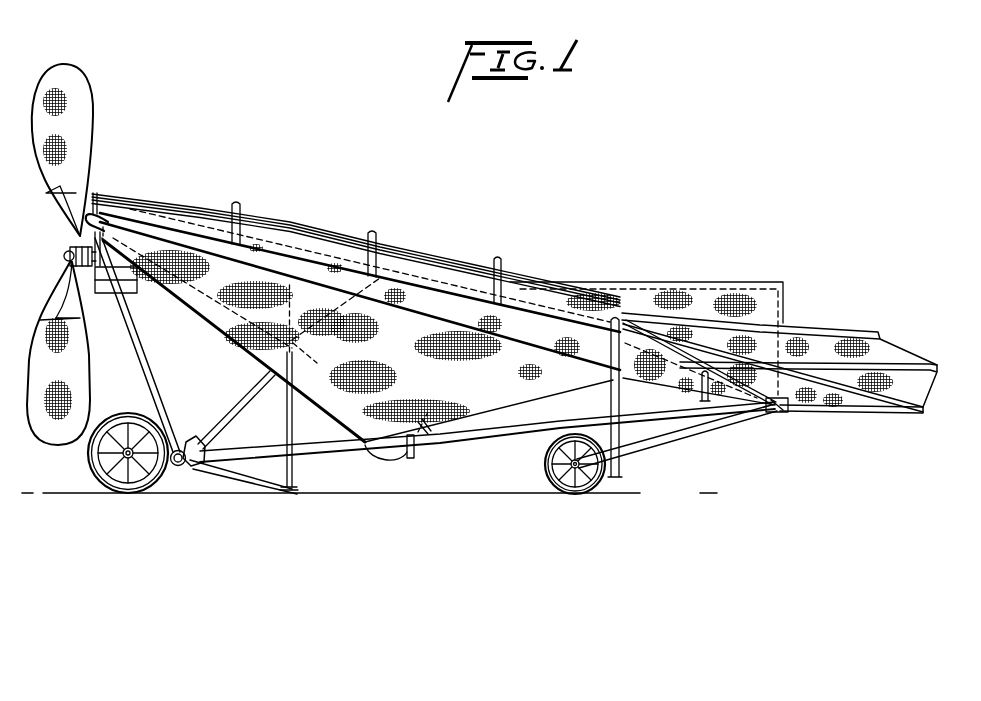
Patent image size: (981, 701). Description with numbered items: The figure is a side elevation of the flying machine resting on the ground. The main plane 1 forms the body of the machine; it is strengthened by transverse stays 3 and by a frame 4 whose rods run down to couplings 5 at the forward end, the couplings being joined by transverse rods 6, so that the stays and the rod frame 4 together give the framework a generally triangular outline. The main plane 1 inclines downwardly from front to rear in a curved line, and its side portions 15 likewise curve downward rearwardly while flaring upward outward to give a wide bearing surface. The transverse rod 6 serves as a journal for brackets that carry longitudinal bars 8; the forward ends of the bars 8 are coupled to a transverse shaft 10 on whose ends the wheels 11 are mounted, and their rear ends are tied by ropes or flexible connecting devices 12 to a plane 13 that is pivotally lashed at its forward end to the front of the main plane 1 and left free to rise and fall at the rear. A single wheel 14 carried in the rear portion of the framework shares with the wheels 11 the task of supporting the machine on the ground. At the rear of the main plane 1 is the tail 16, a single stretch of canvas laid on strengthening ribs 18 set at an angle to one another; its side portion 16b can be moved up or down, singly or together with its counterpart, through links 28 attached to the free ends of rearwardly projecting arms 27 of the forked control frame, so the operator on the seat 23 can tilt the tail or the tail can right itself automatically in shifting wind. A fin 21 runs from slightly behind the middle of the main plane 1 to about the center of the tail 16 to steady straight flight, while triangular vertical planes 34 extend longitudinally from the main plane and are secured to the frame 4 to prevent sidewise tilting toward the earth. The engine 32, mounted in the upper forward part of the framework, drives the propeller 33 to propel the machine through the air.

The main plane 1 is at (392, 252).
The transverse stays 3 is at (236, 204).
The frame 4 is at (258, 453).
The couplings 5 is at (190, 438).
The transverse rods 6 is at (177, 467).
The longitudinal bars 8 is at (240, 485).
The transverse shaft 10 is at (128, 413).
The wheels 11 is at (97, 468).
The ropes or flexible connecting devices 12 is at (292, 420).
The plane 13 is at (230, 335).
The single wheel 14 is at (567, 492).
The side portions 15 is at (268, 244).
The tail 16 is at (840, 404).
The side portion of the tail 16b is at (872, 347).
The strengthening ribs 18 is at (823, 363).
The fin 21 is at (624, 300).
The seat 23 is at (390, 462).
The rearwardly projecting arms 27 is at (755, 417).
The links 28 is at (786, 404).
The engine 32 is at (106, 226).
The propeller 33 is at (82, 115).
The vertical planes 34 is at (413, 327).